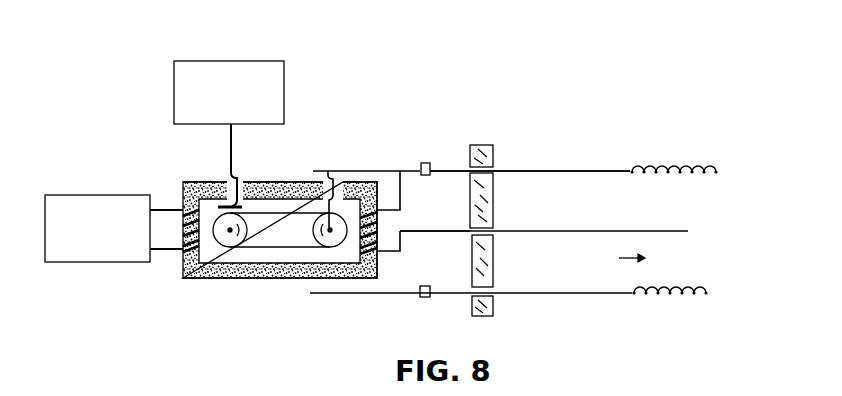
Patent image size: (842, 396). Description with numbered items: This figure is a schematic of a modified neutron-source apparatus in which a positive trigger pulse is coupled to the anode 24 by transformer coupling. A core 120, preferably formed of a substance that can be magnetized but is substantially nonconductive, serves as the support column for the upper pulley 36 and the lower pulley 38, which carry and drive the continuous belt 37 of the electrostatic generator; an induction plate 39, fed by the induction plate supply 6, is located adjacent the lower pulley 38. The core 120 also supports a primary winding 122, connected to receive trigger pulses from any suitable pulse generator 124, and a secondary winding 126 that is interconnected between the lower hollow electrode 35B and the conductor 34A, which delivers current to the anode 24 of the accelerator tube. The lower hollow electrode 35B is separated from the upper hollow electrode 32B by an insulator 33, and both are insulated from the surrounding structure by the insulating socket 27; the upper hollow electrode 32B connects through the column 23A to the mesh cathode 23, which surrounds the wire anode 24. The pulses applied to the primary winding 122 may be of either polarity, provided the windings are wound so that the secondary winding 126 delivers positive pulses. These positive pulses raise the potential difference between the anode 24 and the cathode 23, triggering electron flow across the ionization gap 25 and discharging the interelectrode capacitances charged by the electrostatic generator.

The induction plate supply 6 is at (270, 61).
The pulse generator 124 is at (100, 195).
The primary winding 122 is at (182, 204).
The core 120 is at (305, 182).
The induction plate 39 is at (243, 207).
The lower pulley 38 is at (248, 228).
The continuous belt 37 is at (303, 214).
The upper pulley 36 is at (313, 237).
The secondary winding 126 is at (380, 218).
The lower hollow electrode 35B is at (380, 171).
The insulator 33 is at (424, 163).
The upper hollow electrode 32B is at (452, 170).
The insulating socket 27 is at (493, 153).
The column 23A is at (593, 171).
The cathode 23 is at (697, 168).
The anode 24 is at (667, 231).
The ionization gap 25 is at (621, 258).
The conductor 34A is at (428, 231).